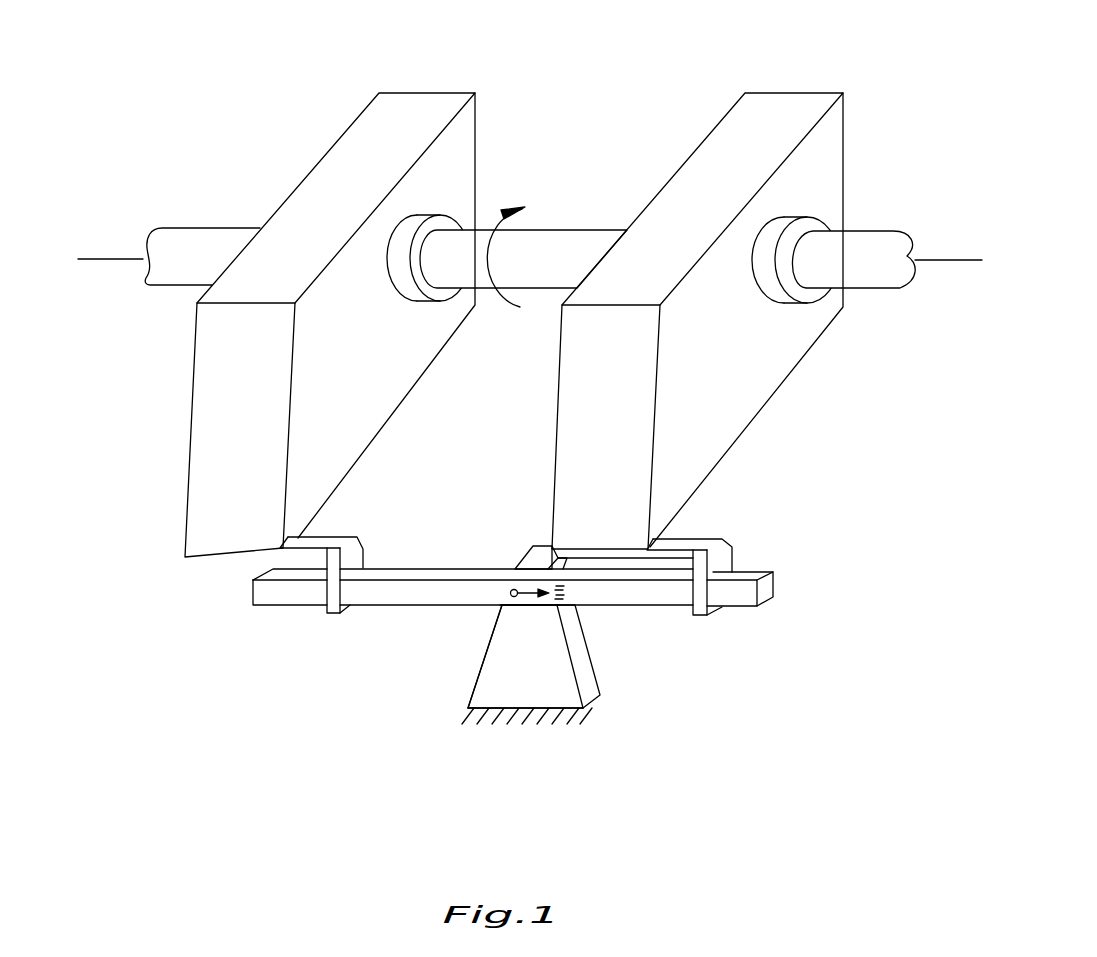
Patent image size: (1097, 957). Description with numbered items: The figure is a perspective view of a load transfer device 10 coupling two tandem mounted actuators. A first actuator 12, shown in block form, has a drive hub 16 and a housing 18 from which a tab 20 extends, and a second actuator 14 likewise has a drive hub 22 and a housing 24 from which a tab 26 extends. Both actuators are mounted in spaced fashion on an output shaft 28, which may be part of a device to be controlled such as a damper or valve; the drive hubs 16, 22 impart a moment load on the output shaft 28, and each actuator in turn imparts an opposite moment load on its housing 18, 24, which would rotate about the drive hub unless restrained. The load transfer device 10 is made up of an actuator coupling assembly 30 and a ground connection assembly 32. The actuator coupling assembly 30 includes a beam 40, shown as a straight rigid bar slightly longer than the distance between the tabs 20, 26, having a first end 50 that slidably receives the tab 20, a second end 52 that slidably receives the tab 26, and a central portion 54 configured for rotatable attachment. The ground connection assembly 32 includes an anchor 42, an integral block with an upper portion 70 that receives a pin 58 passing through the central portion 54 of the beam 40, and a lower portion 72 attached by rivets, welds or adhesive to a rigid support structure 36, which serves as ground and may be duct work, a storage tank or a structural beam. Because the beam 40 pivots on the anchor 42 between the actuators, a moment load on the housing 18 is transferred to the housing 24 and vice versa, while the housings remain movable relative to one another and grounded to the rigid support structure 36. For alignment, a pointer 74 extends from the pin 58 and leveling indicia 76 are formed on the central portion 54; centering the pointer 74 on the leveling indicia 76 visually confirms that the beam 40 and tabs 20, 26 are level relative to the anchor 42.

The load transfer device 10 is at (835, 550).
The first actuator 12 is at (283, 325).
The second actuator 14 is at (684, 321).
The drive hub 16 is at (402, 298).
The housing 18 is at (371, 424).
The tab 20 is at (338, 538).
The drive hub 22 is at (781, 303).
The housing 24 is at (570, 441).
The tab 26 is at (697, 538).
The output shaft 28 is at (530, 257).
The actuator coupling assembly 30 is at (516, 605).
The ground connection assembly 32 is at (536, 656).
The rigid support structure 36 is at (580, 718).
The beam 40 is at (524, 609).
The anchor 42 is at (597, 675).
The first end 50 is at (268, 595).
The second end 52 is at (765, 594).
The central portion 54 is at (488, 597).
The pin 58 is at (511, 590).
The upper portion 70 is at (535, 547).
The lower portion 72 is at (480, 697).
The pointer 74 is at (523, 596).
The leveling indicia 76 is at (568, 592).